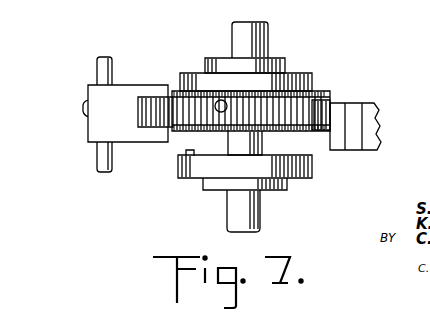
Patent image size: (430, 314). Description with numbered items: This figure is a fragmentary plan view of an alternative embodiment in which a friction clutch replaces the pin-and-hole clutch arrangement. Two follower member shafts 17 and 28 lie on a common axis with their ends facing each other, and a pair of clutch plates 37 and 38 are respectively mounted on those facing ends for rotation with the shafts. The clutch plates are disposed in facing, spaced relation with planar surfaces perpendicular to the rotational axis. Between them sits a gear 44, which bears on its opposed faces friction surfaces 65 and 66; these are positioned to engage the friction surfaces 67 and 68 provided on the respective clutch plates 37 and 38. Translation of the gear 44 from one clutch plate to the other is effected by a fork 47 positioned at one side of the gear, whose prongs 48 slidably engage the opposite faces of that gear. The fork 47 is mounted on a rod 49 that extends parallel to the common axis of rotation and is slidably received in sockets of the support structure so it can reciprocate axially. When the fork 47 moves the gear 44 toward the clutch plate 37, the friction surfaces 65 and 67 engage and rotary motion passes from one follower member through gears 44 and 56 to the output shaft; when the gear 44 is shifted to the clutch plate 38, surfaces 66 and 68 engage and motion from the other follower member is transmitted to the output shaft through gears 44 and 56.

The follower member shaft 17 is at (251, 211).
The follower member shaft 28 is at (262, 37).
The clutch plate 37 is at (300, 180).
The clutch plate 38 is at (296, 74).
The gear 44 is at (190, 112).
The fork 47 is at (96, 99).
The prongs 48 is at (160, 91).
The rod 49 is at (97, 156).
The gear 56 is at (394, 121).
The friction surface 65 is at (305, 135).
The friction surface 66 is at (314, 93).
The friction surface 67 is at (190, 155).
The friction surface 68 is at (214, 108).